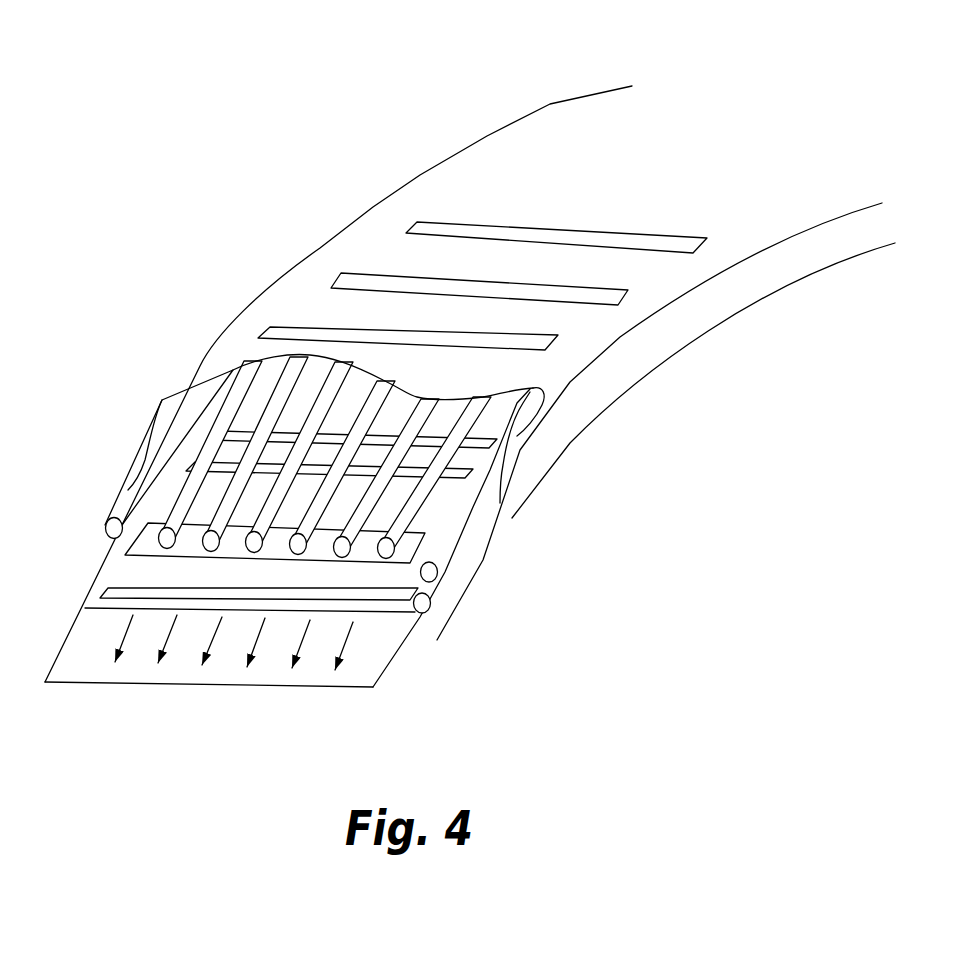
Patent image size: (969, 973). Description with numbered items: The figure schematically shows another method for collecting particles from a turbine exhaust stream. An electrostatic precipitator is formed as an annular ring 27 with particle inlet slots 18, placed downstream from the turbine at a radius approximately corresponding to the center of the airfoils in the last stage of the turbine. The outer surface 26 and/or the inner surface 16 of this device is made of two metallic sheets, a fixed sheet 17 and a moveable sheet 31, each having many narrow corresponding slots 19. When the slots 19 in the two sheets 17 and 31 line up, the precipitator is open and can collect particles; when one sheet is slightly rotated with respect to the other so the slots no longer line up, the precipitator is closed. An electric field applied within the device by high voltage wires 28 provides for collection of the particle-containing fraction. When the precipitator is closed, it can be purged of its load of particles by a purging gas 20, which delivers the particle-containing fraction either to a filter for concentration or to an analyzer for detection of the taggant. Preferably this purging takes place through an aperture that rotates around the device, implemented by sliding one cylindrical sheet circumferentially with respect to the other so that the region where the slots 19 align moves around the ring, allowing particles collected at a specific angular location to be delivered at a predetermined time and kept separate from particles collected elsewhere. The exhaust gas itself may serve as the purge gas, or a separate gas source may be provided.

The annular ring 27 is at (548, 108).
The particle inlet slots 18 is at (458, 223).
The high voltage wires 28 is at (260, 417).
The outer surface 26 is at (528, 388).
The inner surface 16 is at (497, 503).
The fixed sheet 17 is at (437, 572).
The moveable sheet 31 is at (430, 603).
The slots 19 is at (152, 538).
The purging gas 20 is at (257, 663).